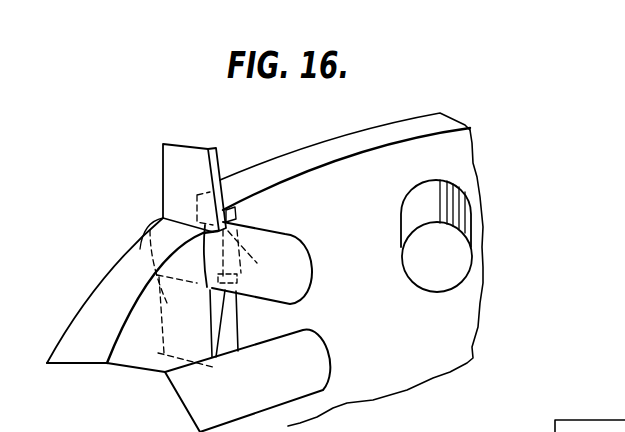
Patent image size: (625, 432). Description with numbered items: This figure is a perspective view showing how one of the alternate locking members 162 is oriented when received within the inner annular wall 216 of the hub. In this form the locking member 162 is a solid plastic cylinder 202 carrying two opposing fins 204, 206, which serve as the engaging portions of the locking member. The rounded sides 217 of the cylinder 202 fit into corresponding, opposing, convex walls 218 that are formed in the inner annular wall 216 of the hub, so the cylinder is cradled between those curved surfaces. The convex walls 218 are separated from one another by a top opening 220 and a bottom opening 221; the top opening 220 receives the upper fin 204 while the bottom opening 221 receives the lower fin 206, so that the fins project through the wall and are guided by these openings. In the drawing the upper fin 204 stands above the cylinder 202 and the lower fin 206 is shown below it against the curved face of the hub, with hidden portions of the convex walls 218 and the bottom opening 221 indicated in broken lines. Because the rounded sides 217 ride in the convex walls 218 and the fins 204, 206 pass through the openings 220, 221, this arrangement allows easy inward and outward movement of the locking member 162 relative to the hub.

The locking member 162 is at (142, 196).
The fin 204 is at (215, 160).
The inner annular wall 216 is at (457, 150).
The cylinder 202 is at (266, 238).
The top opening 220 is at (140, 239).
The convex walls 218 is at (257, 263).
The rounded sides 217 is at (258, 290).
The bottom opening 221 is at (160, 305).
The fin 206 is at (163, 373).